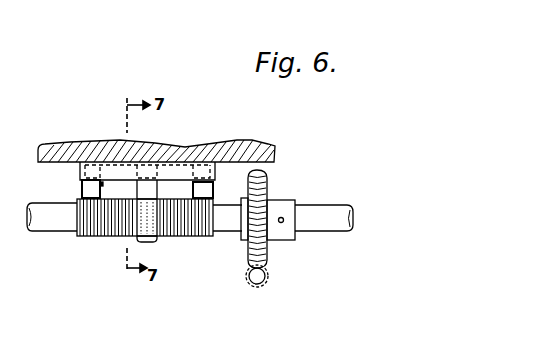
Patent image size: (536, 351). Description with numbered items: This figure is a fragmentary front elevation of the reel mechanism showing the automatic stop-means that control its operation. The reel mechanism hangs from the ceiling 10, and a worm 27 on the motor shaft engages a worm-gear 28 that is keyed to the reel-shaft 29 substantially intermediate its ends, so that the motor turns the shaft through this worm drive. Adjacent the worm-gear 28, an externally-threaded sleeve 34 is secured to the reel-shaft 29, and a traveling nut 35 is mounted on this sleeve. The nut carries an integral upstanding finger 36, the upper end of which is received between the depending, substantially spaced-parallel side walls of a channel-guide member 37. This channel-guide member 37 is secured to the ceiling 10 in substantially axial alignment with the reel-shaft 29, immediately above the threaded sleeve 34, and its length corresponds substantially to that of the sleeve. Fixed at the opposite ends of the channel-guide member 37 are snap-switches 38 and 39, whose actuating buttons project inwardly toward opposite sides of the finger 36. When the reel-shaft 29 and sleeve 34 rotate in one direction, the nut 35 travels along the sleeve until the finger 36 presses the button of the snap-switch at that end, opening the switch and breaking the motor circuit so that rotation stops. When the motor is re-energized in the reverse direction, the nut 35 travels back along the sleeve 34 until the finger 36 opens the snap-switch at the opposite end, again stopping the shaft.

The ceiling 10 is at (246, 148).
The worm 27 is at (257, 288).
The worm-gear 28 is at (269, 256).
The reel-shaft 29 is at (323, 233).
The externally-threaded sleeve 34 is at (87, 237).
The traveling nut 35 is at (148, 243).
The upstanding finger 36 is at (163, 165).
The channel-guide member 37 is at (117, 170).
The snap-switch 38 is at (82, 188).
The snap-switch 39 is at (193, 190).